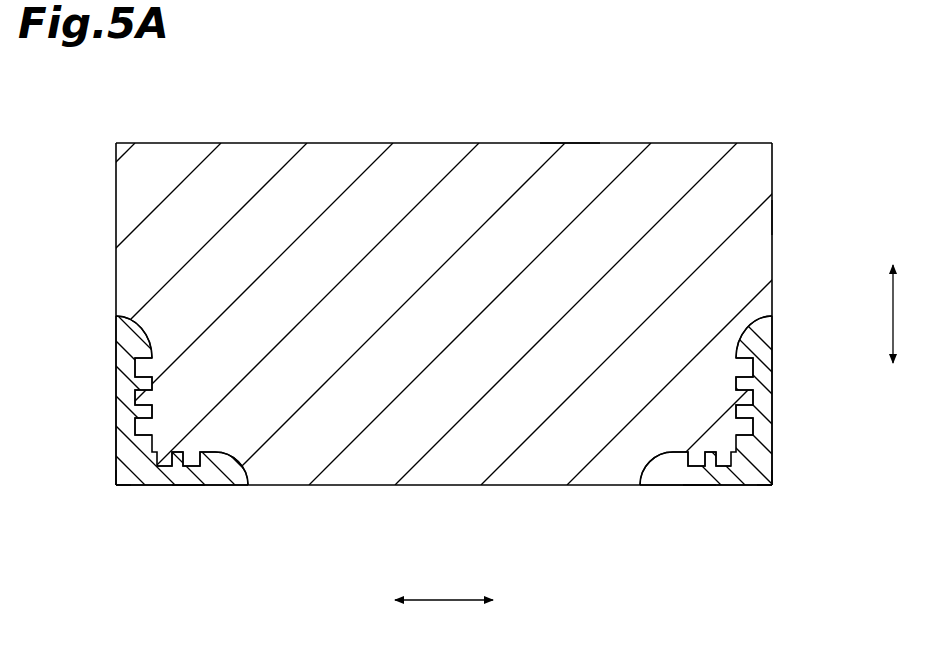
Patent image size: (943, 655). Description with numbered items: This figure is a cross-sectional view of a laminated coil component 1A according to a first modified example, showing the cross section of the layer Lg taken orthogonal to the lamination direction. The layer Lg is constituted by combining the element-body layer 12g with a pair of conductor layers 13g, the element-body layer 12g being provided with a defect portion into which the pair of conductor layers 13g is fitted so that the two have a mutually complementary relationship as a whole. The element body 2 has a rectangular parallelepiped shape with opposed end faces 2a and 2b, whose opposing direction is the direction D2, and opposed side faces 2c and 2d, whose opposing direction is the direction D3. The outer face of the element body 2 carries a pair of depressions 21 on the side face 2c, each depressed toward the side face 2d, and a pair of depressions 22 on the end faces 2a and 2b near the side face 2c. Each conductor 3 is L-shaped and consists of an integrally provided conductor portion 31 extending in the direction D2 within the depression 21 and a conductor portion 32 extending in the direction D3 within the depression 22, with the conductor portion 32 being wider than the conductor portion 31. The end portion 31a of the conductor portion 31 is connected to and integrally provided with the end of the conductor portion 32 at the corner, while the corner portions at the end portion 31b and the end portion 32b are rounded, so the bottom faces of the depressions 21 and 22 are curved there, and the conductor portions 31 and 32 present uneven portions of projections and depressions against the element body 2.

The laminated coil component 1A is at (684, 112).
The element body 2 is at (355, 141).
The end face 2a is at (116, 272).
The end face 2b is at (772, 270).
The side face 2c is at (442, 487).
The side face 2d is at (457, 142).
The element-body layer 12g is at (772, 217).
The layer Lg is at (562, 122).
The conductor 3 is at (112, 394).
The conductor portion 31 is at (147, 491).
The conductor portion 32 is at (112, 438).
The end portion 31a is at (113, 489).
The end portion 31b is at (254, 490).
The end portion 32b is at (112, 315).
The depression 21 is at (218, 464).
The depression 22 is at (140, 348).
The conductor layer 13g is at (188, 488).
The direction D2 is at (444, 619).
The direction D3 is at (916, 314).